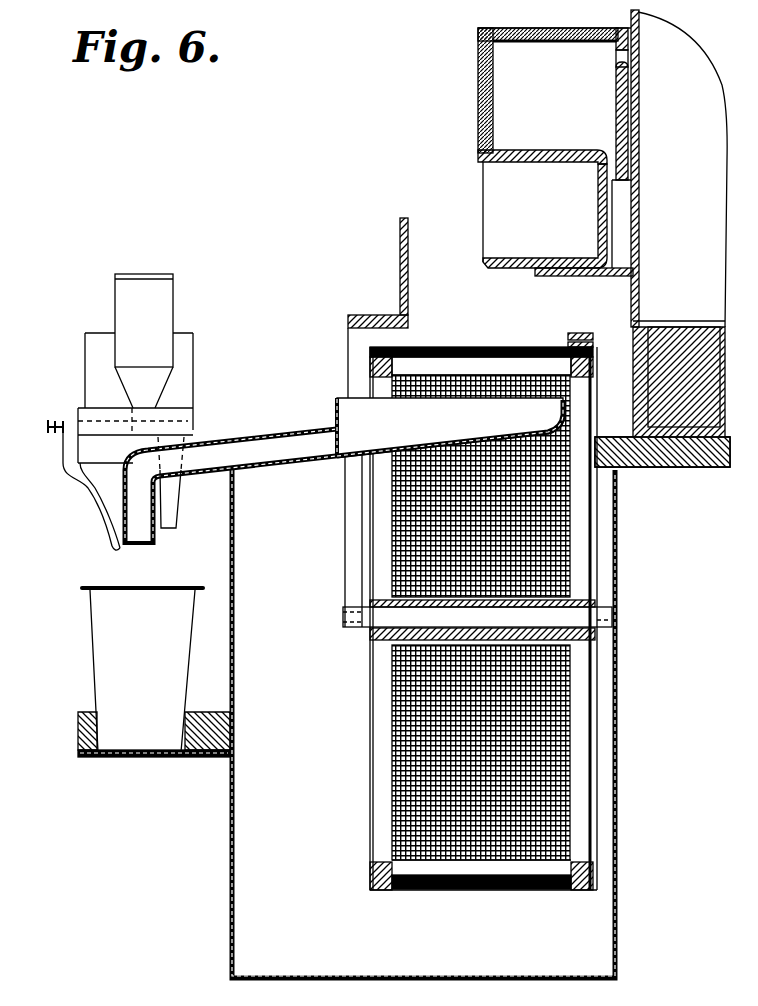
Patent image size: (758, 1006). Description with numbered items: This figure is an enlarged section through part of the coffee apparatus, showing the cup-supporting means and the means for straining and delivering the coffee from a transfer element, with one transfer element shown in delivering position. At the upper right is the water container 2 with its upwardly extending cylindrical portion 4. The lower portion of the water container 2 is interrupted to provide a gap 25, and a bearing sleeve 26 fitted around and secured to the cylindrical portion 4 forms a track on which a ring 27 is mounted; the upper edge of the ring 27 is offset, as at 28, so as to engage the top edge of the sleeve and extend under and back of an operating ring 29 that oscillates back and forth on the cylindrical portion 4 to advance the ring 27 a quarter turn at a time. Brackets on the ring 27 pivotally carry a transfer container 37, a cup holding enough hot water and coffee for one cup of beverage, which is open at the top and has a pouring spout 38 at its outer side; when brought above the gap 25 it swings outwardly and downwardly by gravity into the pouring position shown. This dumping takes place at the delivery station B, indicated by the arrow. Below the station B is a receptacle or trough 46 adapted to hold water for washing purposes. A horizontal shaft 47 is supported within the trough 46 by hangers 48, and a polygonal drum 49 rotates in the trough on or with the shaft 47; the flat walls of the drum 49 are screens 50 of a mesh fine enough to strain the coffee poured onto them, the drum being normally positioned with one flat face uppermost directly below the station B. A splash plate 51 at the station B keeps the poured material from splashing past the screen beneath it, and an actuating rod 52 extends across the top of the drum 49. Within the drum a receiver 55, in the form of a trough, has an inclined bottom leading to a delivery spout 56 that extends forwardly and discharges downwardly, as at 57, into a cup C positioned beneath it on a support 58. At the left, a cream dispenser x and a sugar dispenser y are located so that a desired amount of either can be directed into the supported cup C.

The water container 2 is at (662, 239).
The cylindrical portion 4 is at (640, 205).
The gap 25 is at (566, 274).
The bearing sleeve 26 is at (640, 157).
The ring 27 is at (616, 98).
The offset upper edge portion 28 is at (640, 66).
The operating ring 29 is at (613, 45).
The transfer container 37 is at (538, 151).
The pouring spout 38 is at (492, 262).
The receptacle or trough 46 is at (620, 740).
The horizontal shaft 47 is at (570, 618).
The hangers 48 is at (352, 535).
The polygonal drum 49 is at (435, 643).
The screens 50 is at (458, 350).
The splash plate 51 is at (400, 248).
The actuating rod 52 is at (585, 333).
The receiver 55 is at (450, 427).
The delivery spout 56 is at (268, 444).
The discharge point 57 is at (138, 543).
The support 58 is at (82, 755).
The delivery station B is at (449, 181).
The cup C is at (100, 622).
The cream dispenser x is at (78, 486).
The sugar dispenser y is at (172, 499).